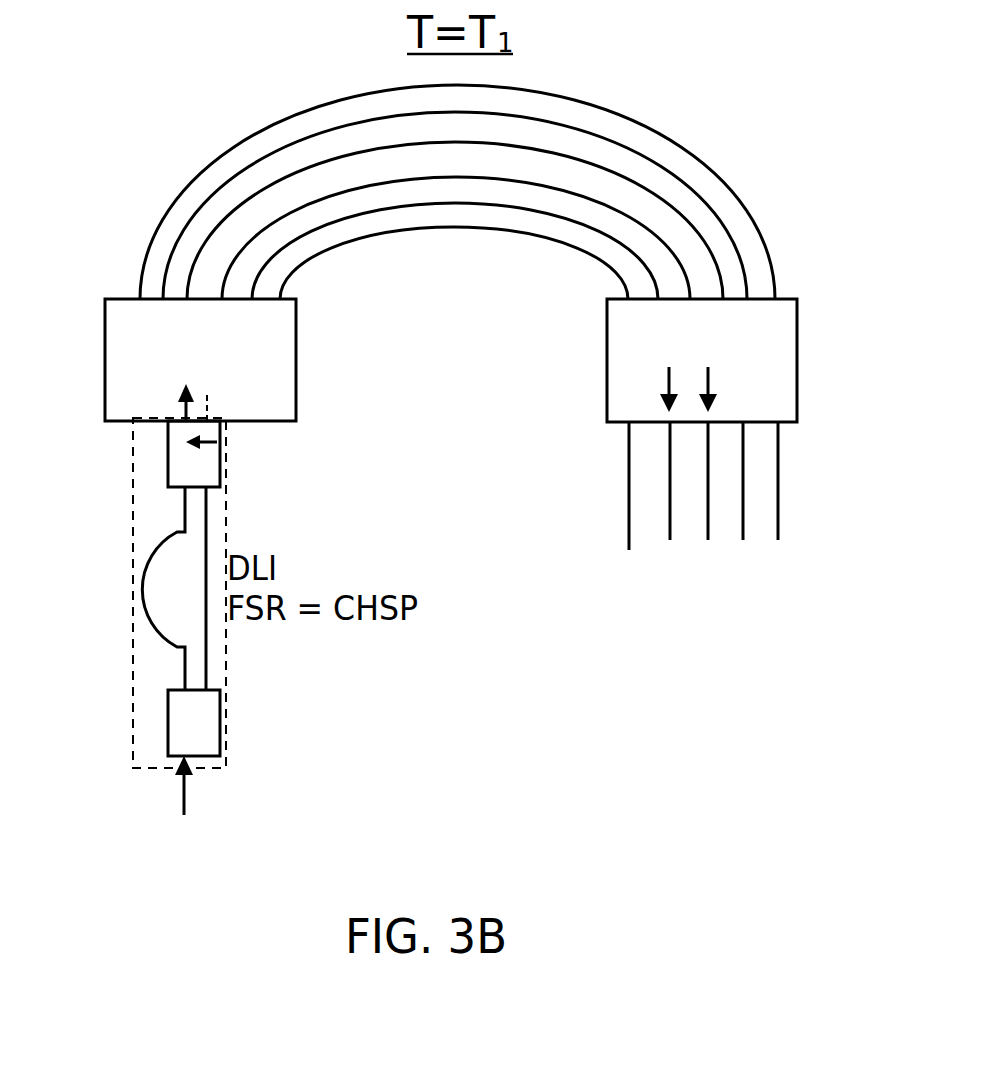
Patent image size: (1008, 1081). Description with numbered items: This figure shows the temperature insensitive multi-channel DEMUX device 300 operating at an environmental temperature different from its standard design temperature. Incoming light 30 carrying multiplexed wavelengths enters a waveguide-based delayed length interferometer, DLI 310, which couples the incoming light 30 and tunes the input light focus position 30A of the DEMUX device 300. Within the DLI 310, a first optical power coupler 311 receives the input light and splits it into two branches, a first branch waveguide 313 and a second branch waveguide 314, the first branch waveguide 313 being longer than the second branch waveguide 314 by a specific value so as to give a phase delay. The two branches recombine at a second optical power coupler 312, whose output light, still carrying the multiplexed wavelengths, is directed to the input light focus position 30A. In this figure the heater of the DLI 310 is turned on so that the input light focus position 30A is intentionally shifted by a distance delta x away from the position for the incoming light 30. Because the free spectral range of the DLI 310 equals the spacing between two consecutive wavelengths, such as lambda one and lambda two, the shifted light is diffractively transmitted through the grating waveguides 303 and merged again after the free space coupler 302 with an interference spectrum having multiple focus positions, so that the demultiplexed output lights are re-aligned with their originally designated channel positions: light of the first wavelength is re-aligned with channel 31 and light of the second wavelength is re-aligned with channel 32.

The multi-channel DEMUX device 300 is at (236, 88).
The grating waveguides 303 is at (522, 215).
The free space coupler 302 is at (798, 357).
The incoming light 30 is at (182, 788).
The input light focus position 30A is at (178, 408).
The delayed length interferometer 310 is at (132, 681).
The first optical power coupler 311 is at (208, 736).
The second optical power coupler 312 is at (220, 470).
The first branch waveguide 313 is at (150, 545).
The second branch waveguide 314 is at (208, 532).
The channel 31 is at (670, 508).
The channel 32 is at (708, 520).